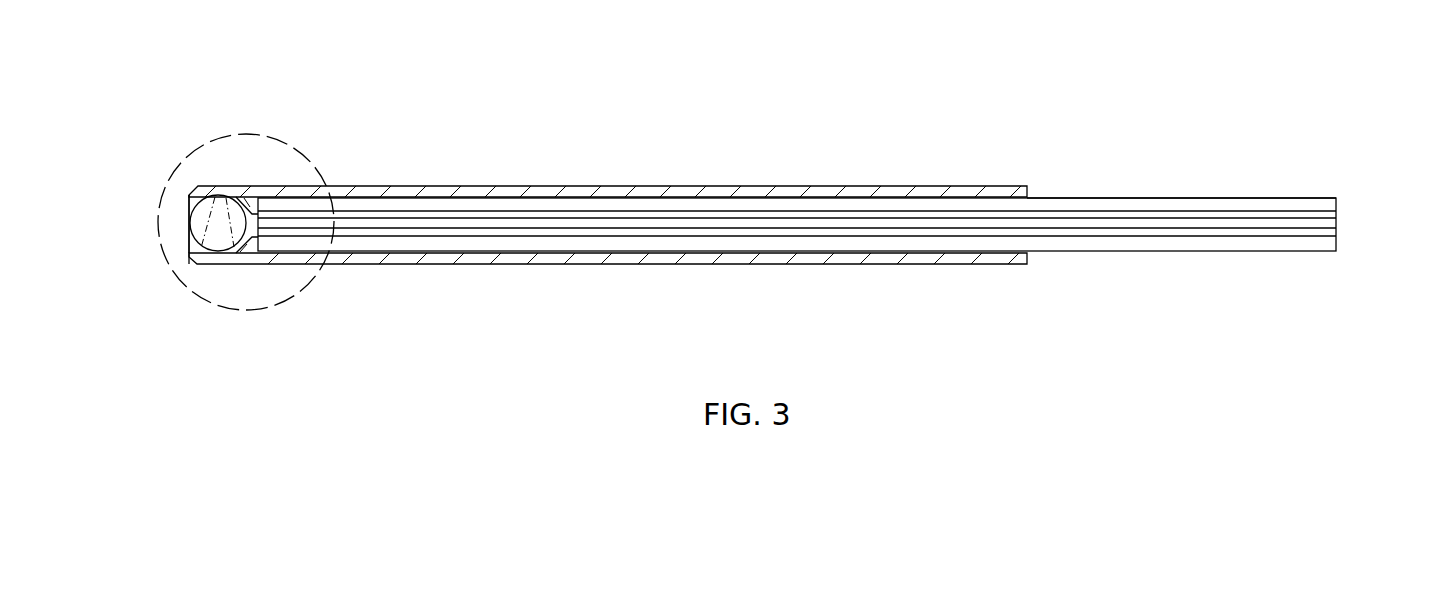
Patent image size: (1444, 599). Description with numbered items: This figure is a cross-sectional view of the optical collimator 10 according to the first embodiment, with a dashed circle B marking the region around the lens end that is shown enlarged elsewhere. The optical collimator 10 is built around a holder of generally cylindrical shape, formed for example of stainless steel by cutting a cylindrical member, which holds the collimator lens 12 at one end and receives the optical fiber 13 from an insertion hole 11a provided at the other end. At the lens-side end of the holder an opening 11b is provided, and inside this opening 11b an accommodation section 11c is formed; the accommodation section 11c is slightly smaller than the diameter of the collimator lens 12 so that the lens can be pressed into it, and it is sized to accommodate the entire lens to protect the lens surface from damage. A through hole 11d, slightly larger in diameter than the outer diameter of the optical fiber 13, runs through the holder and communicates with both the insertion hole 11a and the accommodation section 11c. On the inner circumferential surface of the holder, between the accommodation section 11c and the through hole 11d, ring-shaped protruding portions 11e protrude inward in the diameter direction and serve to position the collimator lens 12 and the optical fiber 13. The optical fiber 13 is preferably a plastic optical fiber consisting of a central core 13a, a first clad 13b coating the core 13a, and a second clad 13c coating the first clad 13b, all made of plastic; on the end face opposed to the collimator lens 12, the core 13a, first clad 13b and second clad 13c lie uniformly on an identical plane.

The optical collimator 10 is at (263, 36).
The enlarged region B is at (267, 136).
The insertion hole 11a is at (1033, 190).
The opening 11b is at (189, 210).
The accommodation section 11c is at (189, 246).
The through hole 11d is at (660, 187).
The protruding portions 11e is at (245, 197).
The collimator lens 12 is at (222, 238).
The optical fiber 13 is at (844, 212).
The core 13a is at (1336, 222).
The first clad 13b is at (1336, 214).
The second clad 13c is at (1336, 203).